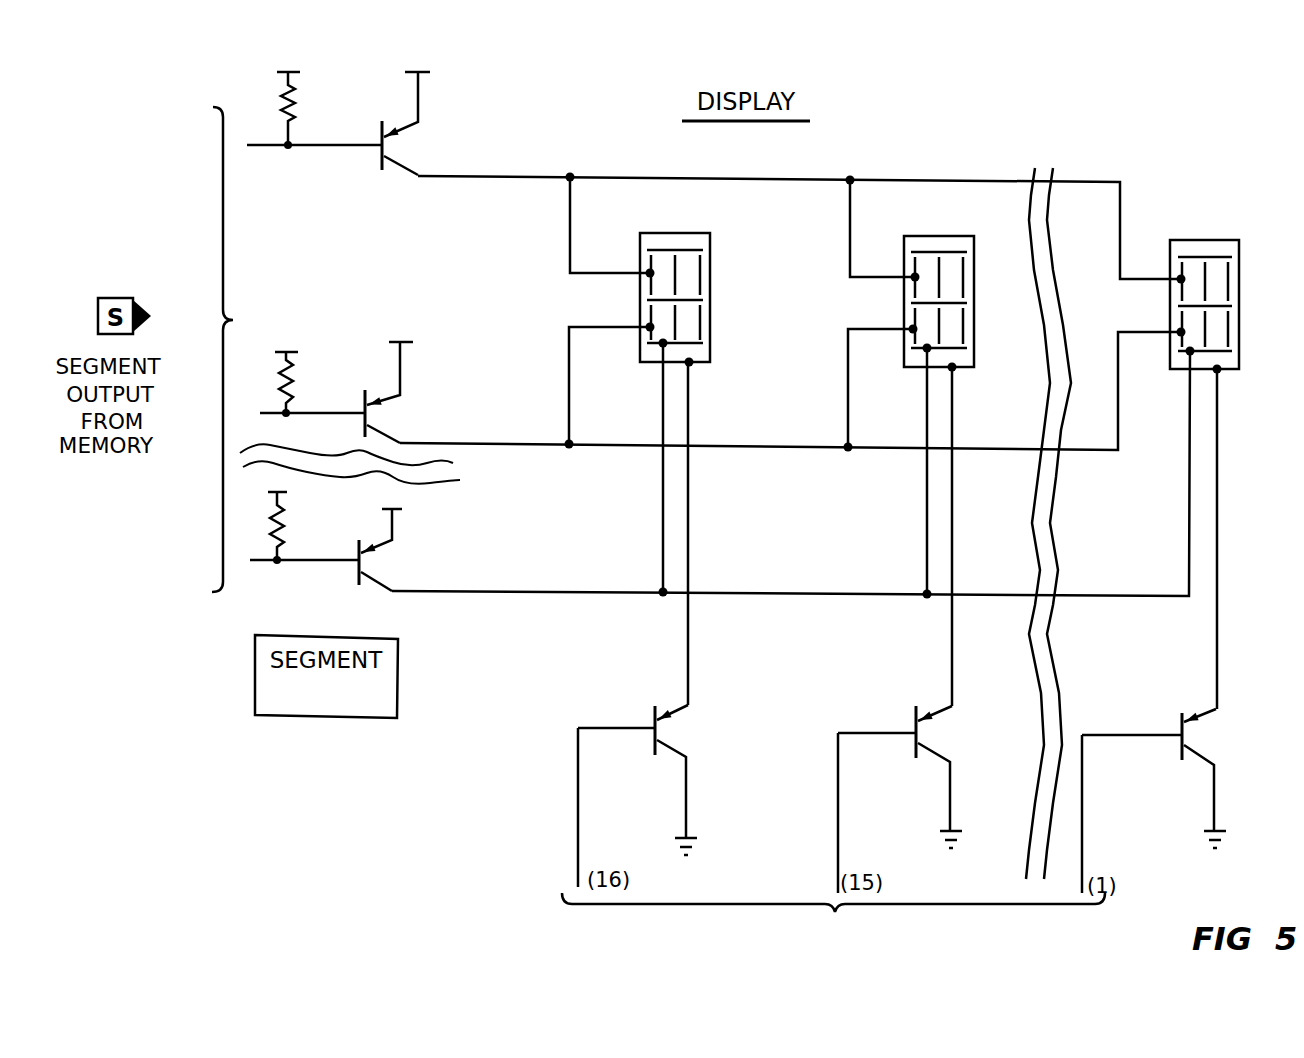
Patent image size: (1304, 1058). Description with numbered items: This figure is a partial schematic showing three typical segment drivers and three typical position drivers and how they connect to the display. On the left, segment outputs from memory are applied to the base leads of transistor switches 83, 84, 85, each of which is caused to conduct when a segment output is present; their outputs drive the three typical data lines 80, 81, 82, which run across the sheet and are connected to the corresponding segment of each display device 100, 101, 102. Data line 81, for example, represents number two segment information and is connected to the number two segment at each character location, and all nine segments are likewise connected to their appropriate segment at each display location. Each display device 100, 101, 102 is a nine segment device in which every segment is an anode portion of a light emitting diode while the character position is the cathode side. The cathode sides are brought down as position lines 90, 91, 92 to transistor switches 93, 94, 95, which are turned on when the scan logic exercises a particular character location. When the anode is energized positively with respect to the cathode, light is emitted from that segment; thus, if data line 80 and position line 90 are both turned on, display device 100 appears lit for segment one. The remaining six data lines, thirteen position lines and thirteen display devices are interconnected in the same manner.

The data line 80 is at (802, 215).
The data line 81 is at (793, 387).
The data line 82 is at (793, 469).
The transistor switch 83 is at (388, 148).
The transistor switch 84 is at (373, 416).
The transistor switch 85 is at (368, 560).
The position line 90 is at (1233, 537).
The position line 91 is at (968, 535).
The position line 92 is at (706, 532).
The transistor switch 93 is at (1188, 736).
The transistor switch 94 is at (920, 734).
The transistor switch 95 is at (660, 729).
The display device 100 is at (1190, 240).
The display device 101 is at (915, 236).
The display device 102 is at (655, 233).